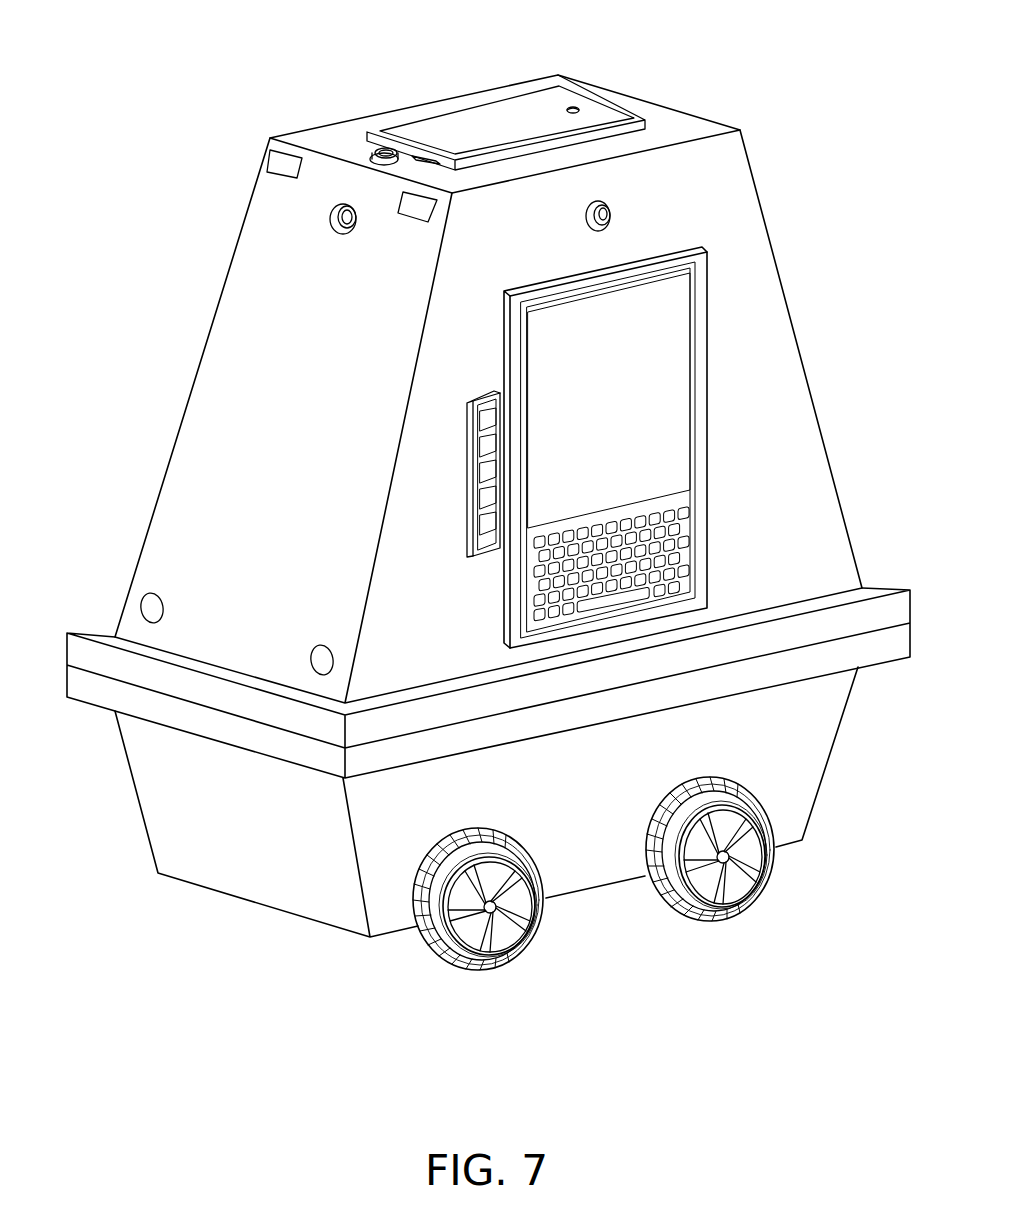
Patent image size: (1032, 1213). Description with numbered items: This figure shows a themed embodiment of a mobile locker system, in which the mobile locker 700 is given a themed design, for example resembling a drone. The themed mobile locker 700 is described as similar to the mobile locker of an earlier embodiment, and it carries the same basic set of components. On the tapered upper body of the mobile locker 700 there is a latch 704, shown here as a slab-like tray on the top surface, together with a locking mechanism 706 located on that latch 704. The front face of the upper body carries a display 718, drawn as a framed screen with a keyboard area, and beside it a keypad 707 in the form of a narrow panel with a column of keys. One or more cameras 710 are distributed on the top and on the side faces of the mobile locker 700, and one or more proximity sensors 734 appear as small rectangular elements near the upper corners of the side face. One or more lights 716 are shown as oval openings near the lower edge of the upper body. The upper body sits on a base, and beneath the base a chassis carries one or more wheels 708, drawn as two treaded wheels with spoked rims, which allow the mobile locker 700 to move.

The mobile locker 700 is at (168, 952).
The latch 704 is at (614, 114).
The locking mechanism 706 is at (573, 108).
The keypad 707 is at (470, 463).
The wheels 708 is at (520, 945).
The cameras 710 is at (370, 155).
The lights 716 is at (148, 607).
The display 718 is at (690, 385).
The proximity sensors 734 is at (263, 158).